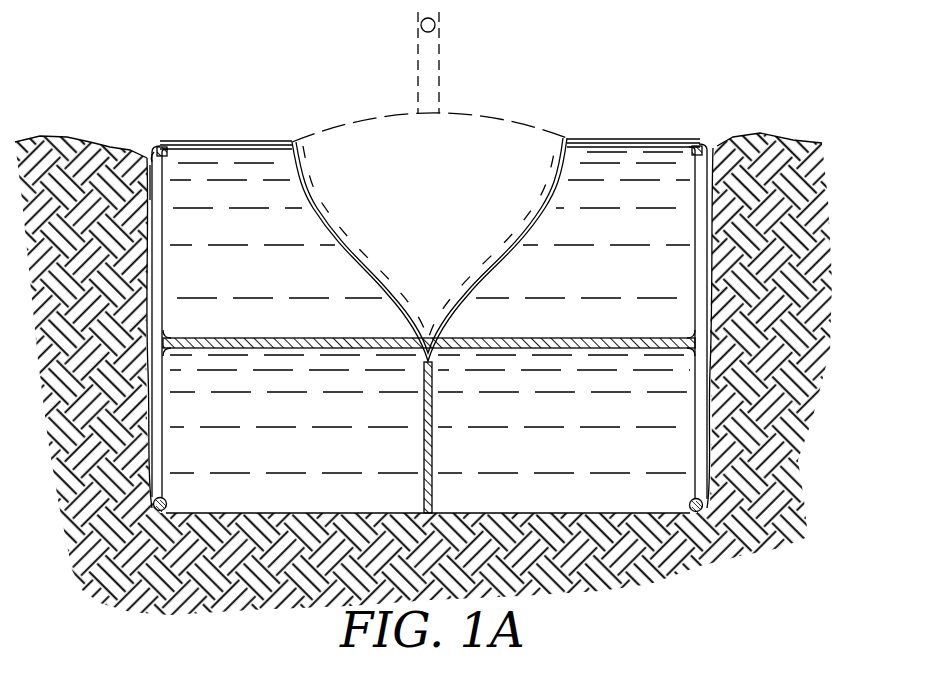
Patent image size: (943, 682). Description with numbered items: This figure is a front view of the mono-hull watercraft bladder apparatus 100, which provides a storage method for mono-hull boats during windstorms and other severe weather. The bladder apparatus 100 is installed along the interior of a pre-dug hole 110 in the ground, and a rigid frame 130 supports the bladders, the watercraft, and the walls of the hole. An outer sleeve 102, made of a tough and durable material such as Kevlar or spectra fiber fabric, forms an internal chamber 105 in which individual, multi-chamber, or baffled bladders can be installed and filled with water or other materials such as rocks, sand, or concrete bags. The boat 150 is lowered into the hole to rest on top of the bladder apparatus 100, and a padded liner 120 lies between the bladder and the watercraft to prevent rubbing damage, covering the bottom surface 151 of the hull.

The bladder apparatus 100 is at (678, 66).
The outer sleeve 102 is at (669, 513).
The internal chamber 105 is at (578, 495).
The pre-dug hole 110 is at (738, 137).
The padded liner 120 is at (266, 142).
The rigid frame 130 is at (152, 158).
The boat 150 is at (457, 113).
The bottom surface 151 is at (535, 158).